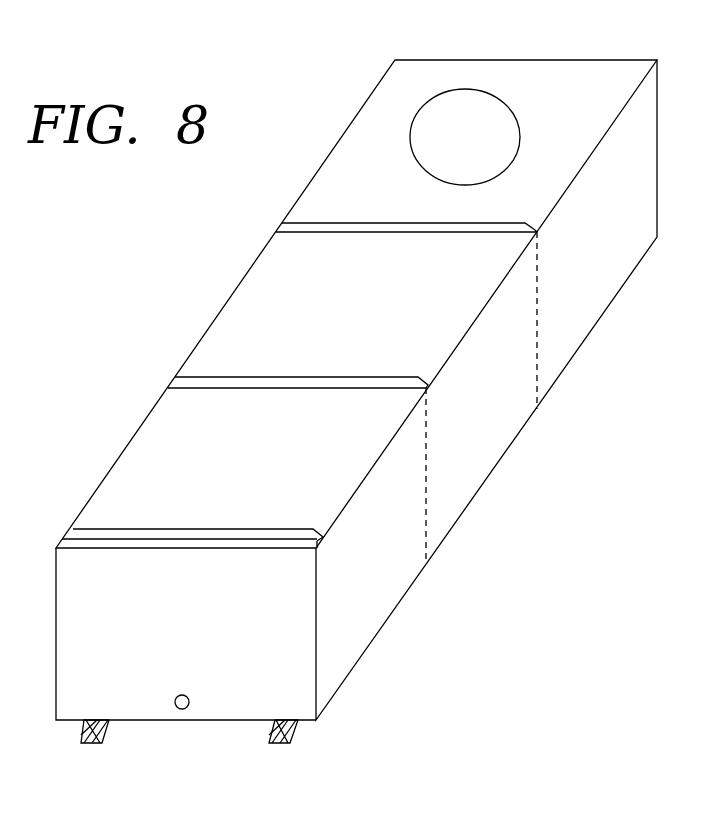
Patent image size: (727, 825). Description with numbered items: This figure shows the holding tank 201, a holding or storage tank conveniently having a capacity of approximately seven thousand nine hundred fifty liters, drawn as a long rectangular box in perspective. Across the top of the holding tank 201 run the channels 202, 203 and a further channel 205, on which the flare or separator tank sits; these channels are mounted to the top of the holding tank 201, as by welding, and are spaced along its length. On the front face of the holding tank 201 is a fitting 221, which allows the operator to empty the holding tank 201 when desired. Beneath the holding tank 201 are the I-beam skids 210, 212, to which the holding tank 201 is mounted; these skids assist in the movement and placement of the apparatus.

The holding tank 201 is at (477, 425).
The channel 202 is at (245, 528).
The channel 203 is at (347, 377).
The third guide rail 205 is at (455, 222).
The fitting 221 is at (184, 695).
The I-beam skid 210 is at (100, 740).
The second mounting foot 212 is at (288, 740).